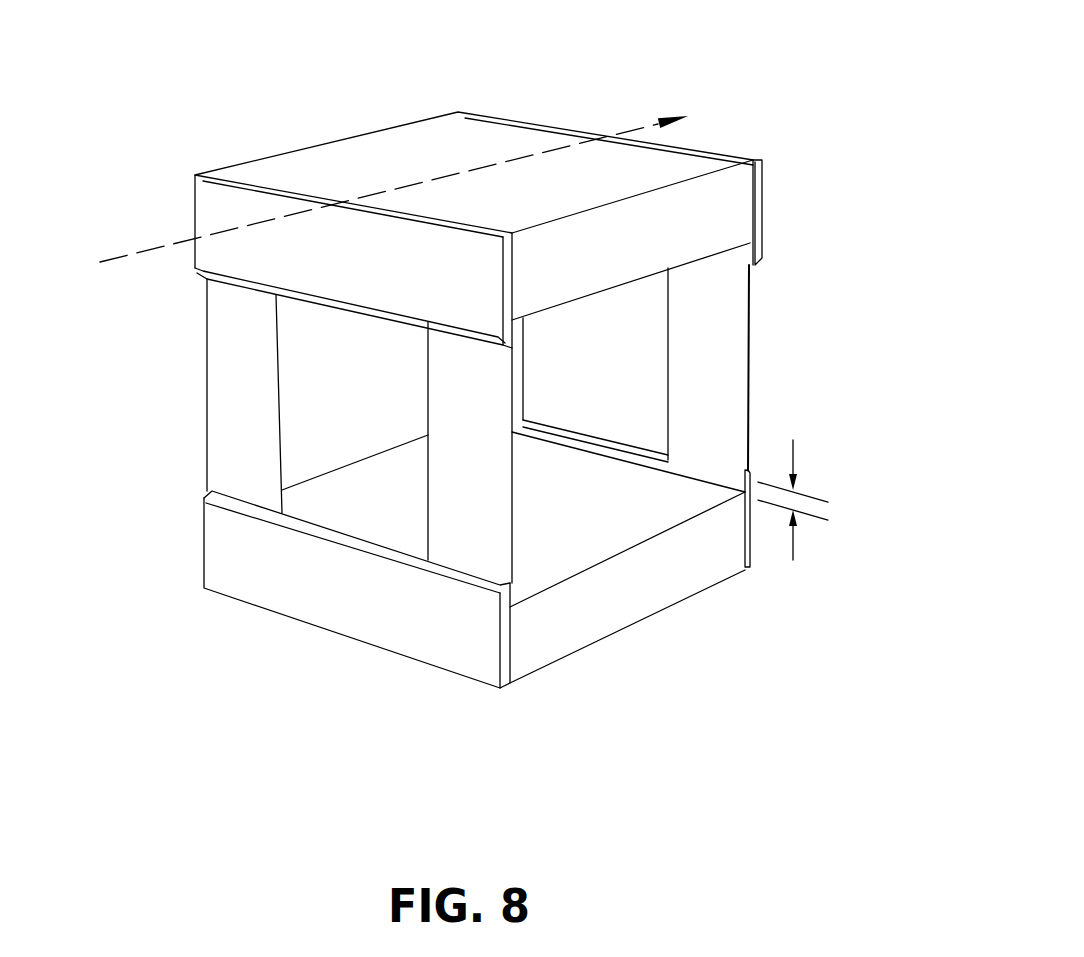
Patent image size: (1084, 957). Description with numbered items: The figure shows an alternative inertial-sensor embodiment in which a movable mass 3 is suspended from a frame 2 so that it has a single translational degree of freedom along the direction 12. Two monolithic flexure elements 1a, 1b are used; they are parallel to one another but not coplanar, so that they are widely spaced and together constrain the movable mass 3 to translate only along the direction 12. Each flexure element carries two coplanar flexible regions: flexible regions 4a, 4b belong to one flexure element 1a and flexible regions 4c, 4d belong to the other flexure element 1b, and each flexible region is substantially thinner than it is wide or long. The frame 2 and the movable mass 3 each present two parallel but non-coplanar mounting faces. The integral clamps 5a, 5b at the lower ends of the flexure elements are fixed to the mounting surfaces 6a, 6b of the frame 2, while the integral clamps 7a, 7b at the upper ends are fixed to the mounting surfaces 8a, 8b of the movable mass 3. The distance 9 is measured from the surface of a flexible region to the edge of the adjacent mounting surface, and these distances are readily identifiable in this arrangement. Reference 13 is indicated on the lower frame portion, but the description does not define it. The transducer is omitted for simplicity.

The movable mass 3 is at (508, 189).
The direction 12 is at (175, 240).
The integral clamp 7a is at (573, 202).
The mounting surface 8a is at (513, 272).
The integral clamp 7b is at (773, 176).
The mounting surface 8b is at (752, 207).
The flexure element 1a is at (349, 431).
The flexure element 1b is at (716, 367).
The flexible region 4a is at (205, 453).
The flexible region 4b is at (512, 505).
The flexible region 4c is at (747, 400).
The flexible region 4d is at (523, 352).
The distance 9 is at (793, 500).
The integral clamp 5a is at (589, 670).
The mounting surface 6a is at (510, 647).
The integral clamp 5b is at (791, 556).
The mounting surface 6b is at (744, 540).
The frame 2 is at (507, 589).
The front plate 13 is at (257, 673).